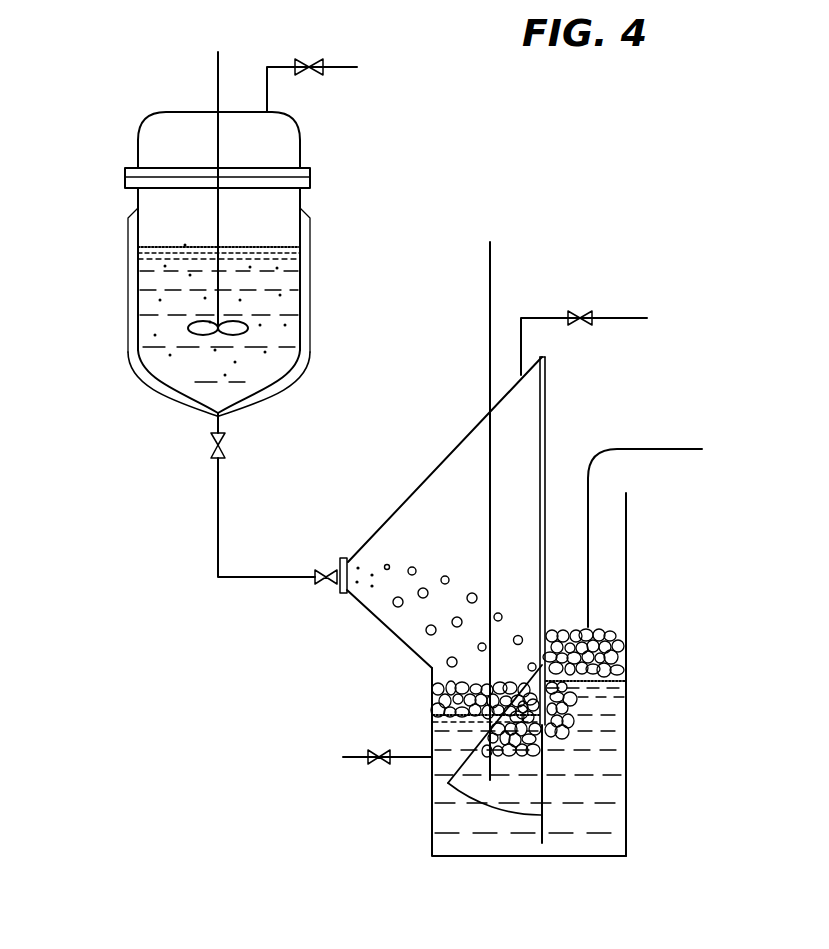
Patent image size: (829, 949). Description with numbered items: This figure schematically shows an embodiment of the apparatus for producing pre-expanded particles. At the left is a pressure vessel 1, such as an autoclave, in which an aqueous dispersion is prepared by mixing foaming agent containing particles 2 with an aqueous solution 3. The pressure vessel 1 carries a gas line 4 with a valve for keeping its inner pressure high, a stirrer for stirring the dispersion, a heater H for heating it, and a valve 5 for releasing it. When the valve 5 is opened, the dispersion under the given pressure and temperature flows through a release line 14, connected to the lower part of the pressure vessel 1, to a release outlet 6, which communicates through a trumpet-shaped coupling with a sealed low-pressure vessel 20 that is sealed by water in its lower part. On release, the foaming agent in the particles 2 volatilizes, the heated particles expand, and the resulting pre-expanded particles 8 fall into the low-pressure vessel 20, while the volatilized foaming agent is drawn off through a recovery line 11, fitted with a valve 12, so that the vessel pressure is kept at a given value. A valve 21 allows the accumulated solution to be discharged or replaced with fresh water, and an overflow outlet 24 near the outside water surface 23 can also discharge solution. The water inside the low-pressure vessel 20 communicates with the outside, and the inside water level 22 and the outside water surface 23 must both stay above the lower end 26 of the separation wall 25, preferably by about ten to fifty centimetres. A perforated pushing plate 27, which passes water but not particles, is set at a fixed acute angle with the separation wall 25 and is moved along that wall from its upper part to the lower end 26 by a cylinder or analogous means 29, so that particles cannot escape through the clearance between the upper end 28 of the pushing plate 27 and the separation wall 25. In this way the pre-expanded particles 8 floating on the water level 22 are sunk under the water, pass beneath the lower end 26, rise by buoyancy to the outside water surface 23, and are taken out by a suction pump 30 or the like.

The pressure vessel 1 is at (246, 232).
The foaming agent containing particles 2 is at (179, 303).
The aqueous solution 3 is at (155, 364).
The gas line 4 is at (321, 60).
The valve 5 is at (183, 457).
The release outlet 6 is at (333, 546).
The pre-expanded particles 8 is at (433, 711).
The recovery line 11 is at (584, 308).
The valve 12 is at (601, 283).
The release line 14 is at (225, 525).
The low-pressure vessel 20 is at (444, 512).
The valve 21 is at (358, 788).
The water level 22 is at (468, 760).
The water surface 23 is at (631, 710).
The overflow outlet 24 is at (631, 684).
The separation wall 25 is at (582, 541).
The lower end of the separation wall 26 is at (629, 784).
The pushing plate 27 is at (484, 774).
The upper end of the pushing plate 28 is at (427, 618).
The cylinder or other analogous means 29 is at (526, 482).
The suction pump 30 is at (645, 612).
The heater H is at (251, 312).